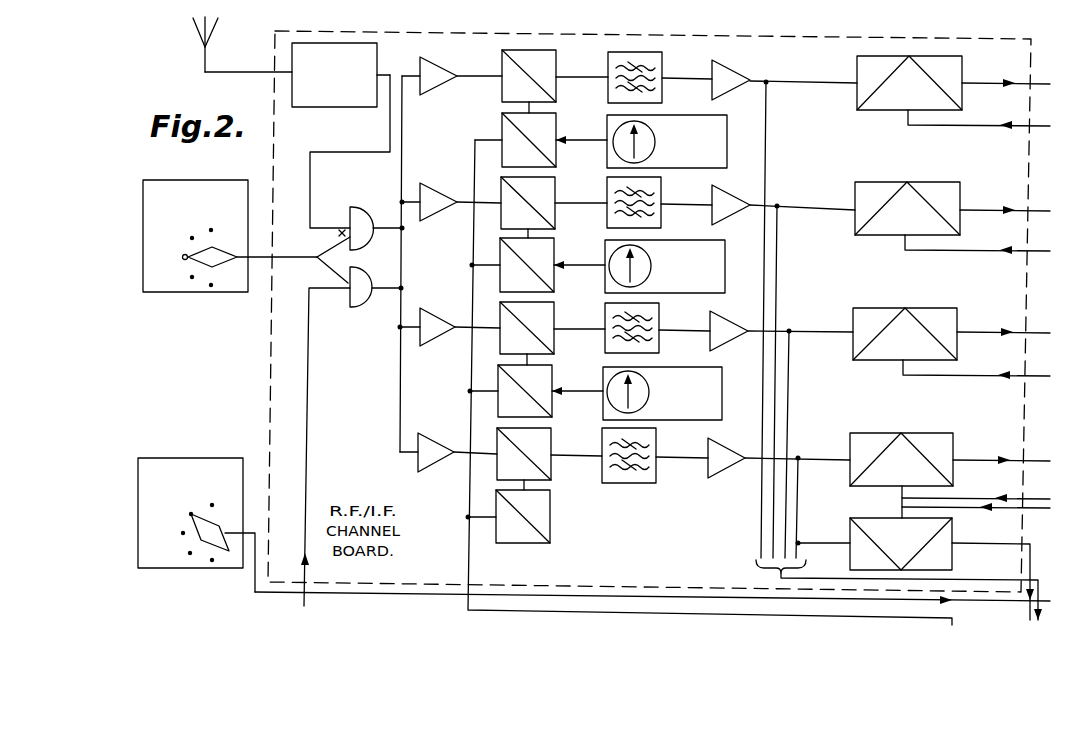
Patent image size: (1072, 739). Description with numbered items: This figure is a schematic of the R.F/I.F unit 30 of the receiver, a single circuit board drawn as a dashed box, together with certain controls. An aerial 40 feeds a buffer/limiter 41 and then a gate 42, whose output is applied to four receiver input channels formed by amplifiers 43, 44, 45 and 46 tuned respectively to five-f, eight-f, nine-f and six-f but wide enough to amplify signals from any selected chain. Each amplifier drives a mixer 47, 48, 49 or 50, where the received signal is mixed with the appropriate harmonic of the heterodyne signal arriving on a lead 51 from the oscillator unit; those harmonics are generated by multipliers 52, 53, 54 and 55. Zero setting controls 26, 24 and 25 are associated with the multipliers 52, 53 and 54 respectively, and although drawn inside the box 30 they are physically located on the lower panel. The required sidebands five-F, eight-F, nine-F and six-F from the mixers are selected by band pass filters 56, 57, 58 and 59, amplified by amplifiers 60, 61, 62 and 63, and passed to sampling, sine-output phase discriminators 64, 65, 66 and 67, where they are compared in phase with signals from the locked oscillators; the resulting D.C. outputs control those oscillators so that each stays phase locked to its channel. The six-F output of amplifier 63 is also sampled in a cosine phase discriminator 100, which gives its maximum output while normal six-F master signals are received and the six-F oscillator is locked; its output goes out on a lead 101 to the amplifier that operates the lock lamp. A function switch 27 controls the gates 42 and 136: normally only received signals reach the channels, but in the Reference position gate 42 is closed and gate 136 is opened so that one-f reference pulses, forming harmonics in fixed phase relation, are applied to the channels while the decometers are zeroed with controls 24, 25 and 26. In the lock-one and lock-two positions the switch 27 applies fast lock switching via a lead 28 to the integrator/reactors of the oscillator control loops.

The zero setting control 24 is at (722, 262).
The zero setting control 25 is at (720, 385).
The zero setting control 26 is at (716, 127).
The function switch 27 is at (227, 289).
The lead 28 is at (607, 598).
The R.F/I.F unit 30 is at (268, 380).
The aerial 40 is at (205, 50).
The buffer/limiter 41 is at (322, 106).
The gate 42 is at (357, 210).
The amplifier 43 is at (433, 84).
The amplifier 44 is at (430, 194).
The amplifier 45 is at (432, 317).
The amplifier 46 is at (426, 443).
The mixer 47 is at (505, 79).
The mixer 48 is at (553, 185).
The mixer 49 is at (545, 318).
The mixer 50 is at (548, 443).
The lead 51 is at (470, 565).
The multiplier 52 is at (552, 123).
The multiplier 53 is at (553, 250).
The multiplier 54 is at (545, 380).
The multiplier 55 is at (545, 518).
The band pass filter 56 is at (610, 60).
The band pass filter 57 is at (660, 217).
The band pass filter 58 is at (657, 343).
The band pass filter 59 is at (655, 472).
The amplifier 60 is at (737, 74).
The amplifier 61 is at (730, 203).
The amplifier 62 is at (727, 330).
The amplifier 63 is at (726, 453).
The phase discriminator 64 is at (857, 63).
The phase discriminator 65 is at (884, 190).
The phase discriminator 66 is at (884, 313).
The phase discriminator 67 is at (887, 440).
The cosine phase discriminator 100 is at (863, 522).
The lead 101 is at (1030, 562).
The gate 136 is at (355, 306).